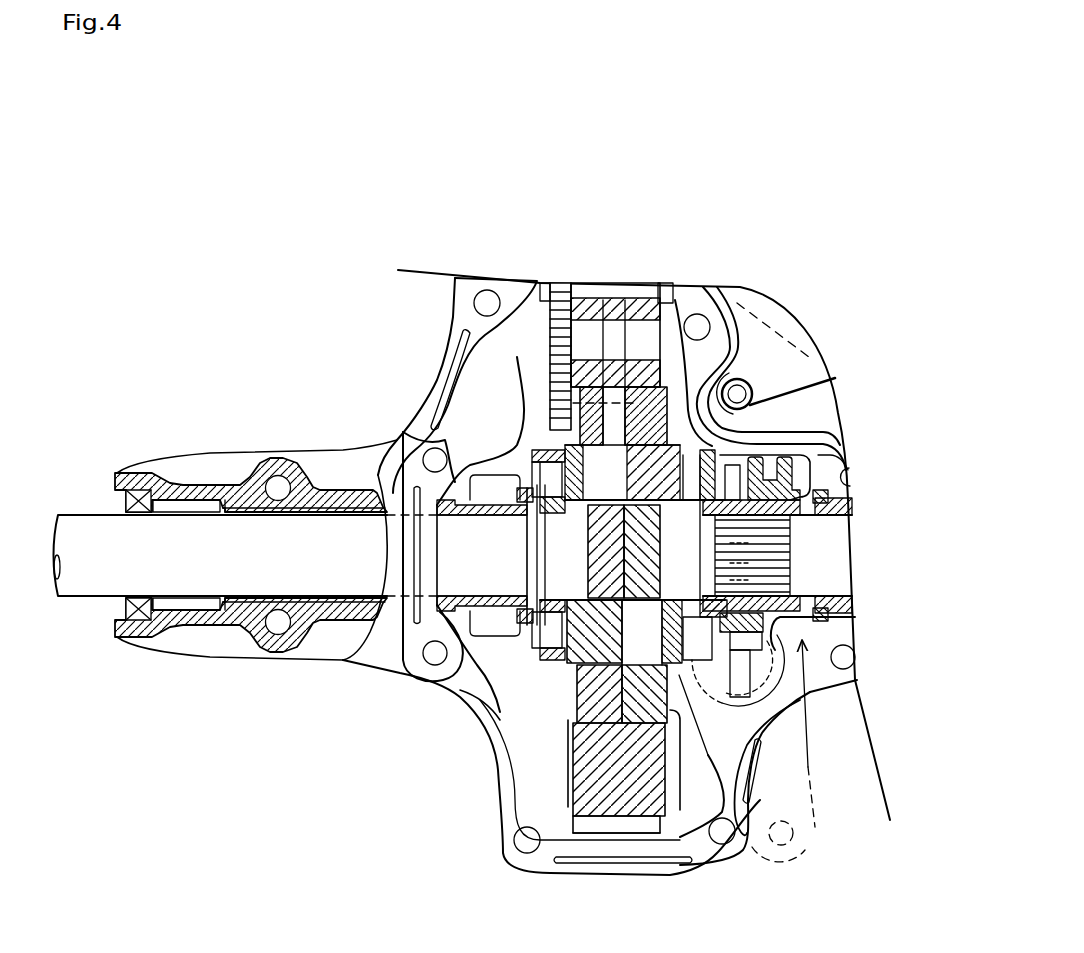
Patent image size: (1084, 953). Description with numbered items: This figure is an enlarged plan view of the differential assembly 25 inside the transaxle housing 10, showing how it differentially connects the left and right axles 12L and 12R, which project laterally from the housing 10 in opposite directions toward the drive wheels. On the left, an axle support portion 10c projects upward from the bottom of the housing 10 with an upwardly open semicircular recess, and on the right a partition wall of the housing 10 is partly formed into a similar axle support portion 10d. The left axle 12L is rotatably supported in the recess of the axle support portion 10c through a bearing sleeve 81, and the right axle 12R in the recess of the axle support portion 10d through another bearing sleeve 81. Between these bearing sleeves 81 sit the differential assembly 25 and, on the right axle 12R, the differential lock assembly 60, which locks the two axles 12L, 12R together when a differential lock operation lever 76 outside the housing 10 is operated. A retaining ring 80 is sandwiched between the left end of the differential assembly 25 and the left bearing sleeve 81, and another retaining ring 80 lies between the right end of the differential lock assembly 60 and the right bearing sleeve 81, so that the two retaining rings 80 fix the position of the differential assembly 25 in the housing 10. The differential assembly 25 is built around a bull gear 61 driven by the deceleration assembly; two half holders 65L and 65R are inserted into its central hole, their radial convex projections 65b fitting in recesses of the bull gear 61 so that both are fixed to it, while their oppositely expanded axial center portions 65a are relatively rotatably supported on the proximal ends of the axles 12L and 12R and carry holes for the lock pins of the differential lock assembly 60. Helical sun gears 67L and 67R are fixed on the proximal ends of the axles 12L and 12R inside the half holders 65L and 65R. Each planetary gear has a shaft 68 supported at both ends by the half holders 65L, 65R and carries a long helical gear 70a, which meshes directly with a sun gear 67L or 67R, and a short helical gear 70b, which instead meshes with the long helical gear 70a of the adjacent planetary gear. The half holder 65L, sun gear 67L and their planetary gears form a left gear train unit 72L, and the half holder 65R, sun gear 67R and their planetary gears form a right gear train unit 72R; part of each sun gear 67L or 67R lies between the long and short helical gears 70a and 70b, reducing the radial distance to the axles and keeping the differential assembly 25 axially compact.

The housing 10 is at (455, 294).
The axle support portion 10c is at (423, 637).
The axle support portion 10d is at (840, 630).
The left axle 12L is at (232, 520).
The right axle 12R is at (843, 565).
The differential assembly 25 is at (497, 440).
The differential lock assembly 60 is at (805, 690).
The bull gear 61 is at (573, 807).
The half holder 65L is at (563, 440).
The half holder 65R is at (700, 447).
The axial center portion 65a is at (573, 720).
The radial convex projection 65b is at (573, 760).
The helical sun gear 67L is at (590, 535).
The helical sun gear 67R is at (698, 500).
The shaft 68 is at (607, 463).
The long helical gear 70a is at (733, 352).
The short helical gear 70b is at (530, 470).
The left gear train unit 72L is at (517, 655).
The right gear train unit 72R is at (680, 672).
The differential lock operation lever 76 is at (815, 830).
The retaining ring 80 is at (530, 475).
The bearing sleeve 81 is at (433, 605).